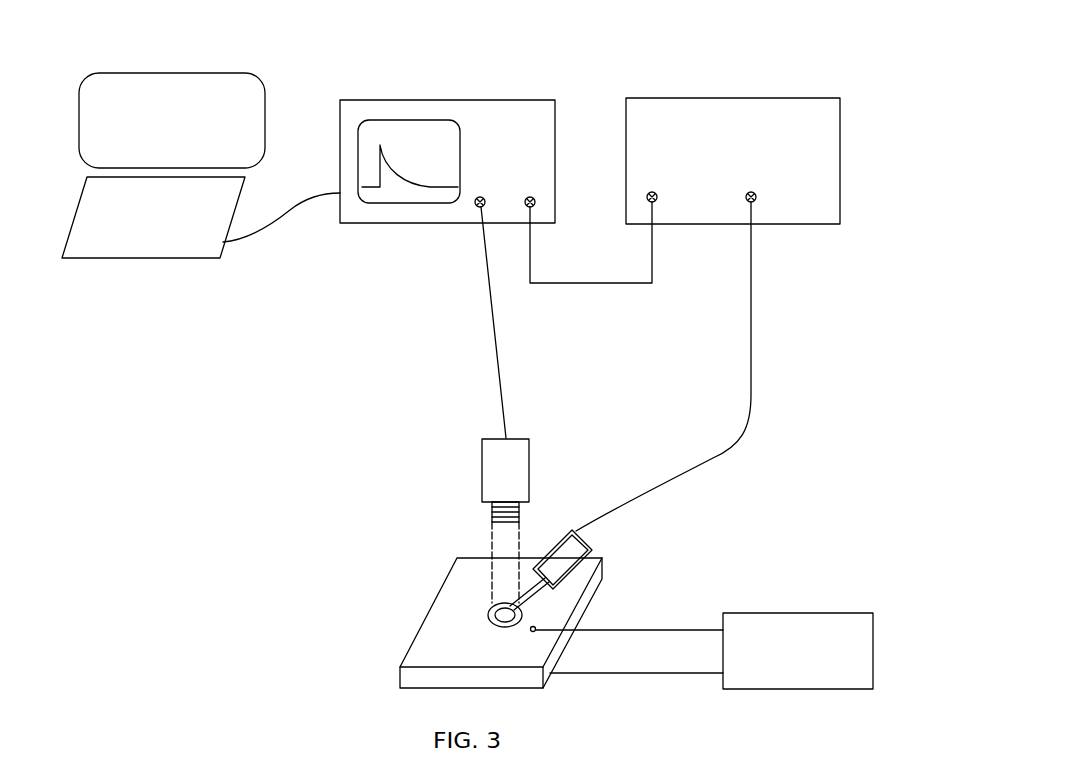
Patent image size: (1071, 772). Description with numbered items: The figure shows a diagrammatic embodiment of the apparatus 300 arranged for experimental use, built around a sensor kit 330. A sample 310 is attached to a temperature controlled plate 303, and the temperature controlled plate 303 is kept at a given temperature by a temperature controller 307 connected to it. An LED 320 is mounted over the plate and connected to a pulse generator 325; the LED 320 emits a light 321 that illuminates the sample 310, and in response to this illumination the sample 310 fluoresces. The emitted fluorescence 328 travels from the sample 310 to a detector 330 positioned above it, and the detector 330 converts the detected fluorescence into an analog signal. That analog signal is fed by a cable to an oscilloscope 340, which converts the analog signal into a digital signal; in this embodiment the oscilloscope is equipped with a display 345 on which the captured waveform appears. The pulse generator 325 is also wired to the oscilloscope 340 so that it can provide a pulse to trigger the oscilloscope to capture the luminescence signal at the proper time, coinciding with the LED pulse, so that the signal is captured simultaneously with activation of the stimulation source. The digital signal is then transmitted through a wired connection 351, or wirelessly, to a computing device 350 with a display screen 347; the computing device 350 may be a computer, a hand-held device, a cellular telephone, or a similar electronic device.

The measurement system 300 is at (808, 68).
The temperature controlled plate 303 is at (432, 678).
The temperature controller 307 is at (762, 679).
The sample 310 is at (487, 618).
The LED 320 is at (570, 558).
The light 321 is at (530, 597).
The pulse generator 325 is at (818, 173).
The emitted fluorescence 328 is at (493, 548).
The detector 330 is at (495, 467).
The oscilloscope 340 is at (370, 213).
The oscilloscope 345 is at (418, 138).
The display screen 347 is at (132, 102).
The computing device 350 is at (150, 233).
The wired connection 351 is at (272, 225).